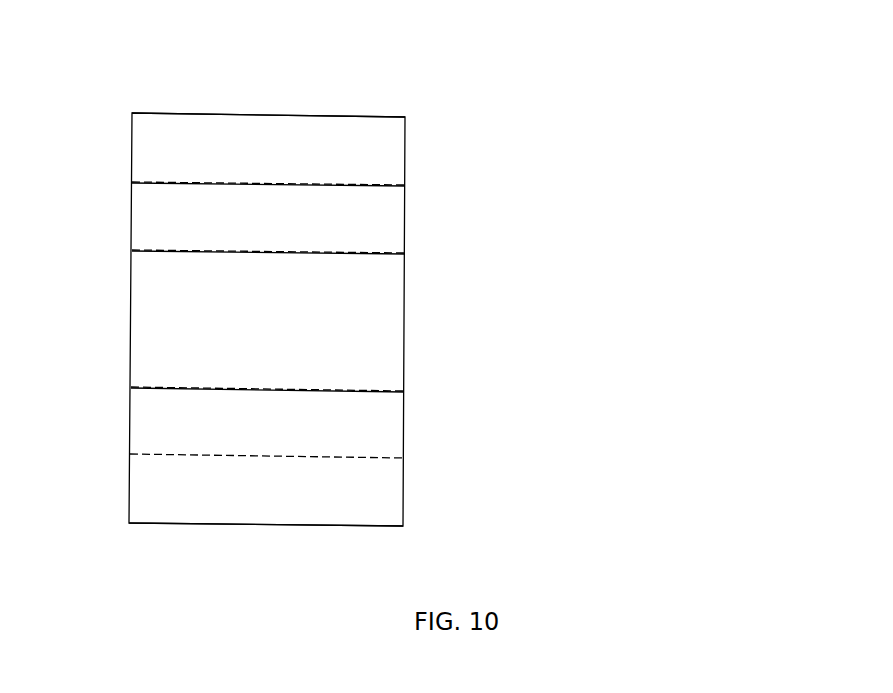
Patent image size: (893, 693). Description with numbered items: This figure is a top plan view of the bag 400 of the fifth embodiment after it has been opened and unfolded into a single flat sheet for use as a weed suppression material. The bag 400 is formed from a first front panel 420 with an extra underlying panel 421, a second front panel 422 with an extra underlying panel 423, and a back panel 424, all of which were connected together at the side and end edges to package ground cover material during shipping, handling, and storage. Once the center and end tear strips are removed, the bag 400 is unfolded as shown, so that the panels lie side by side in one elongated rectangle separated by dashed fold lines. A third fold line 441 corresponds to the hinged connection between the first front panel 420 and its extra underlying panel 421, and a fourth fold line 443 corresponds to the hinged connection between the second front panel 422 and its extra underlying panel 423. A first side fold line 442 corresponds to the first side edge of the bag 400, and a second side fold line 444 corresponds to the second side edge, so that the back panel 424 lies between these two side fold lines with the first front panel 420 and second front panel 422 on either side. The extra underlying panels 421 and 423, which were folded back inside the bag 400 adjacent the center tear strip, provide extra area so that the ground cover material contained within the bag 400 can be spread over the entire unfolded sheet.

The bag 400 is at (443, 135).
The first front panel 420 is at (370, 215).
The extra underlying panel 421 is at (275, 133).
The second front panel 422 is at (378, 423).
The extra underlying panel 423 is at (275, 500).
The back panel 424 is at (373, 312).
The third fold line 441 is at (160, 180).
The first side fold line 442 is at (173, 248).
The fourth fold line 443 is at (168, 456).
The second side fold line 444 is at (168, 387).